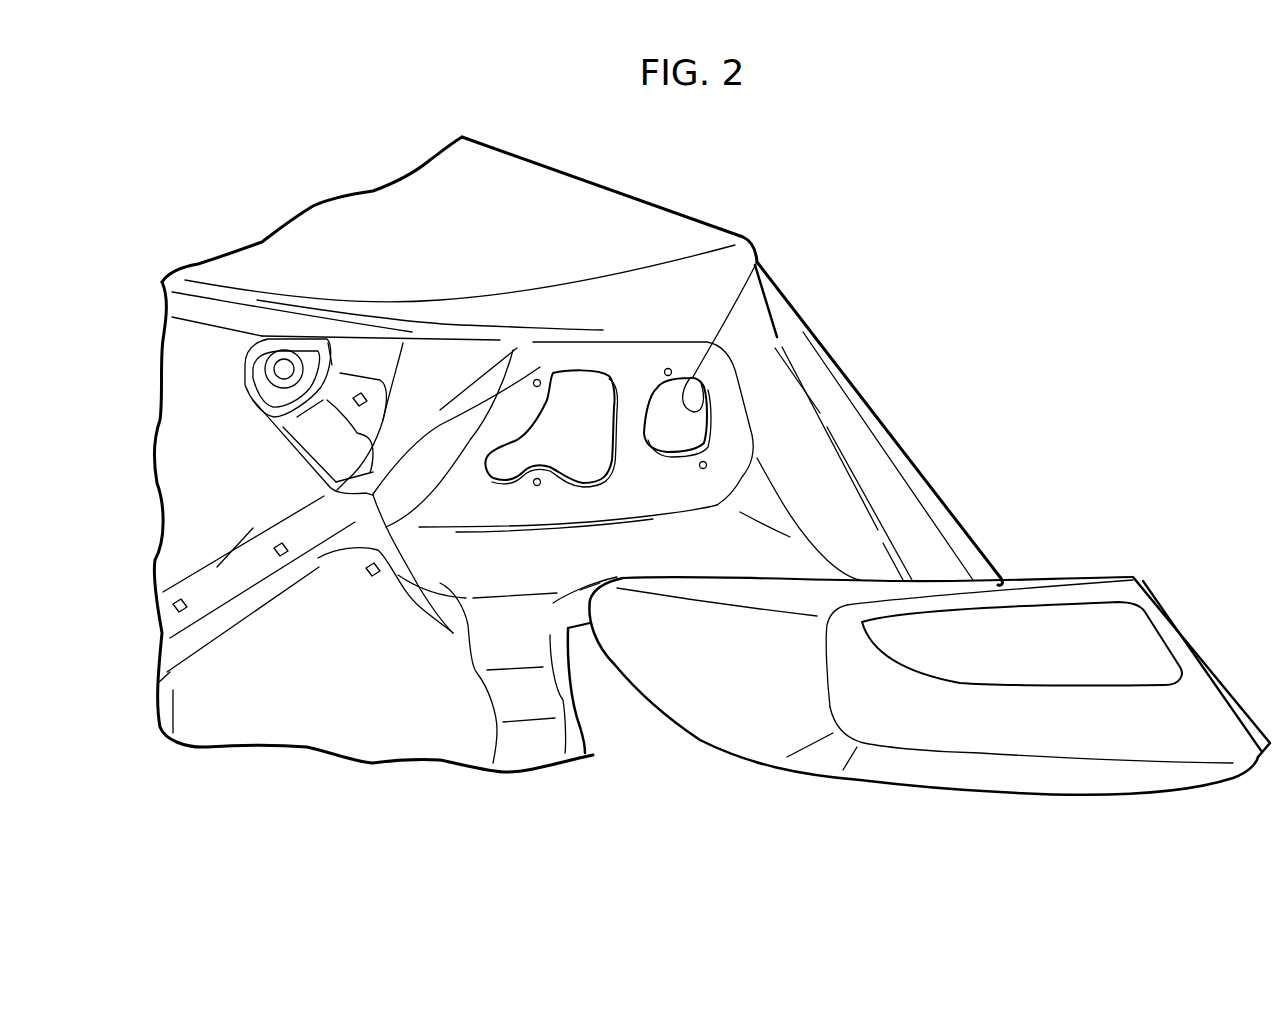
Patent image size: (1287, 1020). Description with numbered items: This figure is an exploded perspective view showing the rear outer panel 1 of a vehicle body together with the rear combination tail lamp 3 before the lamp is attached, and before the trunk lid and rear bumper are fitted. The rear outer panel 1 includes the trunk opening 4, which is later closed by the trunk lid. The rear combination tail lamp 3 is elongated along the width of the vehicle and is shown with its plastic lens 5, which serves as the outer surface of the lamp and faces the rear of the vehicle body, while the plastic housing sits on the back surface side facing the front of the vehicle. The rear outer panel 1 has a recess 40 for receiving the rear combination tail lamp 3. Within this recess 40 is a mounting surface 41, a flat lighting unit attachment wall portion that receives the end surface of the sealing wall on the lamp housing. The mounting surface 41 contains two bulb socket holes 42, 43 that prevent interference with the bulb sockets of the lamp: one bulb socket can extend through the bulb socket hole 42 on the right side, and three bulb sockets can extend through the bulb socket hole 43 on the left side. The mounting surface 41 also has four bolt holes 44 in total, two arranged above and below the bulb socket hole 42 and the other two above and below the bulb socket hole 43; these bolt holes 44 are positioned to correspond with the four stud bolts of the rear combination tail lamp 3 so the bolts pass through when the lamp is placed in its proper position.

The rear outer panel 1 is at (577, 210).
The rear combination tail lamp 3 is at (1010, 793).
The trunk opening 4 is at (823, 347).
The lens 5 is at (905, 763).
The recess 40 is at (800, 457).
The mounting surface 41 is at (632, 360).
The bulb socket hole 42 is at (690, 377).
The bulb socket hole 43 is at (567, 483).
The bolt holes 44 is at (535, 379).